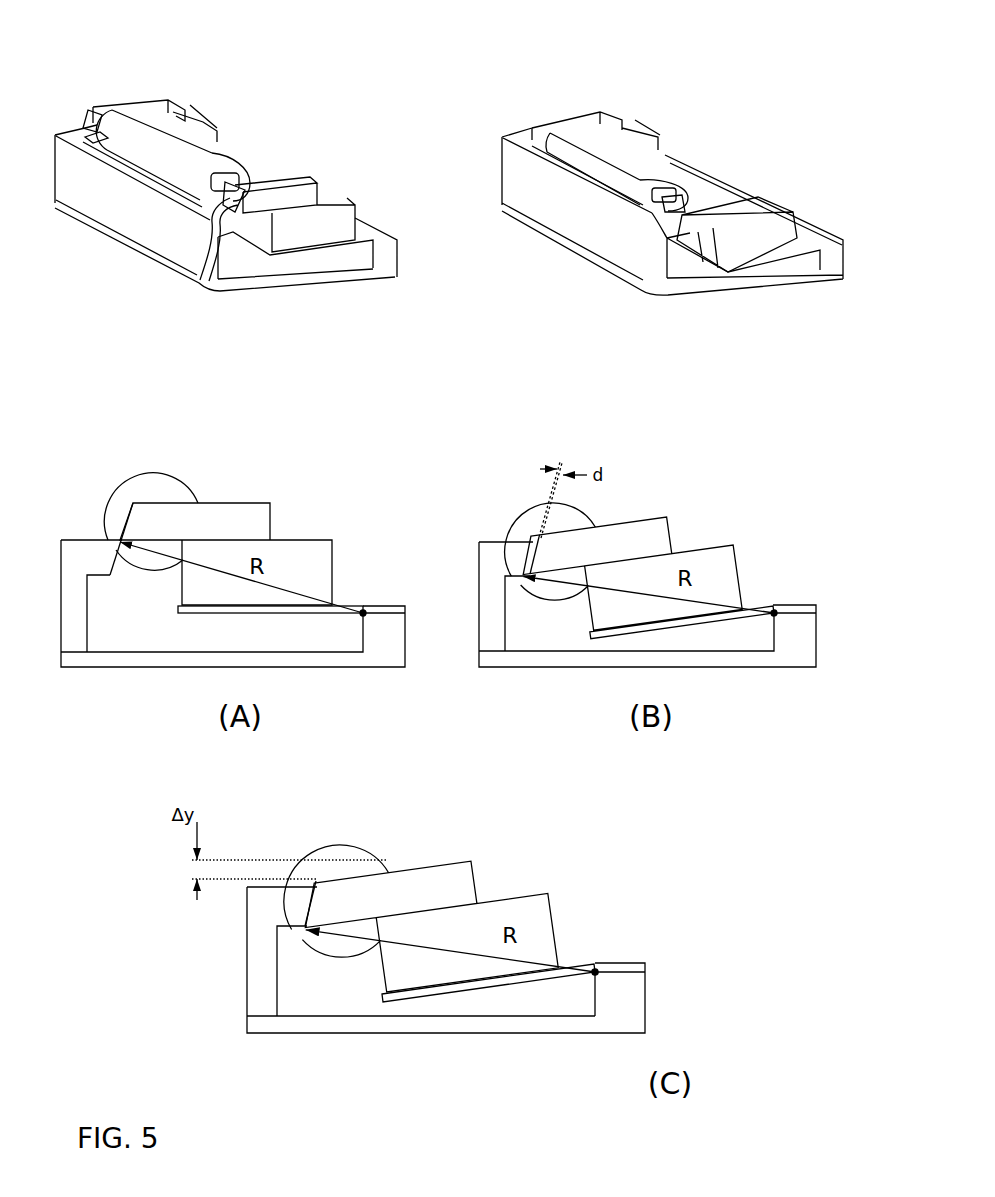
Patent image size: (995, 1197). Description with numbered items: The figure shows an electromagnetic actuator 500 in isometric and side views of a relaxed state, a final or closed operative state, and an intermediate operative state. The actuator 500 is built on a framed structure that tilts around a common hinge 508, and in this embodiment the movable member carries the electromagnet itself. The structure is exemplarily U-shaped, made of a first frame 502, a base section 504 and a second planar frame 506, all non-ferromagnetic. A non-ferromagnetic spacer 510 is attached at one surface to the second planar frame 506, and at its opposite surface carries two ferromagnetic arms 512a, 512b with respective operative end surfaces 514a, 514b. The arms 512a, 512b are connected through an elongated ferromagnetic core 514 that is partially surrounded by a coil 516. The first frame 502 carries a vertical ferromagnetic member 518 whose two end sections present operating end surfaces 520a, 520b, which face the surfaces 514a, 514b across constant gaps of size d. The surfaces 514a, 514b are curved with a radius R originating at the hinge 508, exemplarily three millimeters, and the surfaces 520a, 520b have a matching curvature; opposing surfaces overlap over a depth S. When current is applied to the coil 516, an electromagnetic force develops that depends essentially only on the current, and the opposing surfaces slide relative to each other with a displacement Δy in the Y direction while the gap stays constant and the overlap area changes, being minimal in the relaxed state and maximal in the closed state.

The EM actuator 500 is at (454, 38).
The first frame 502 is at (300, 288).
The base section 504 is at (390, 277).
The second planar frame 506 is at (299, 610).
The common hinge 508 is at (826, 256).
The non-ferromagnetic spacer 510 is at (781, 226).
The ferromagnetic arm 512a is at (160, 98).
The ferromagnetic arm 512b is at (300, 178).
The elongated ferromagnetic member (core) 514 is at (665, 203).
The operative end surface 514a is at (88, 110).
The operative end surface 514b is at (203, 232).
The coil 516 is at (640, 170).
The vertical ferromagnetic member 518 is at (490, 617).
The operating end surface 520a is at (93, 143).
The operating end surface 520b is at (108, 556).